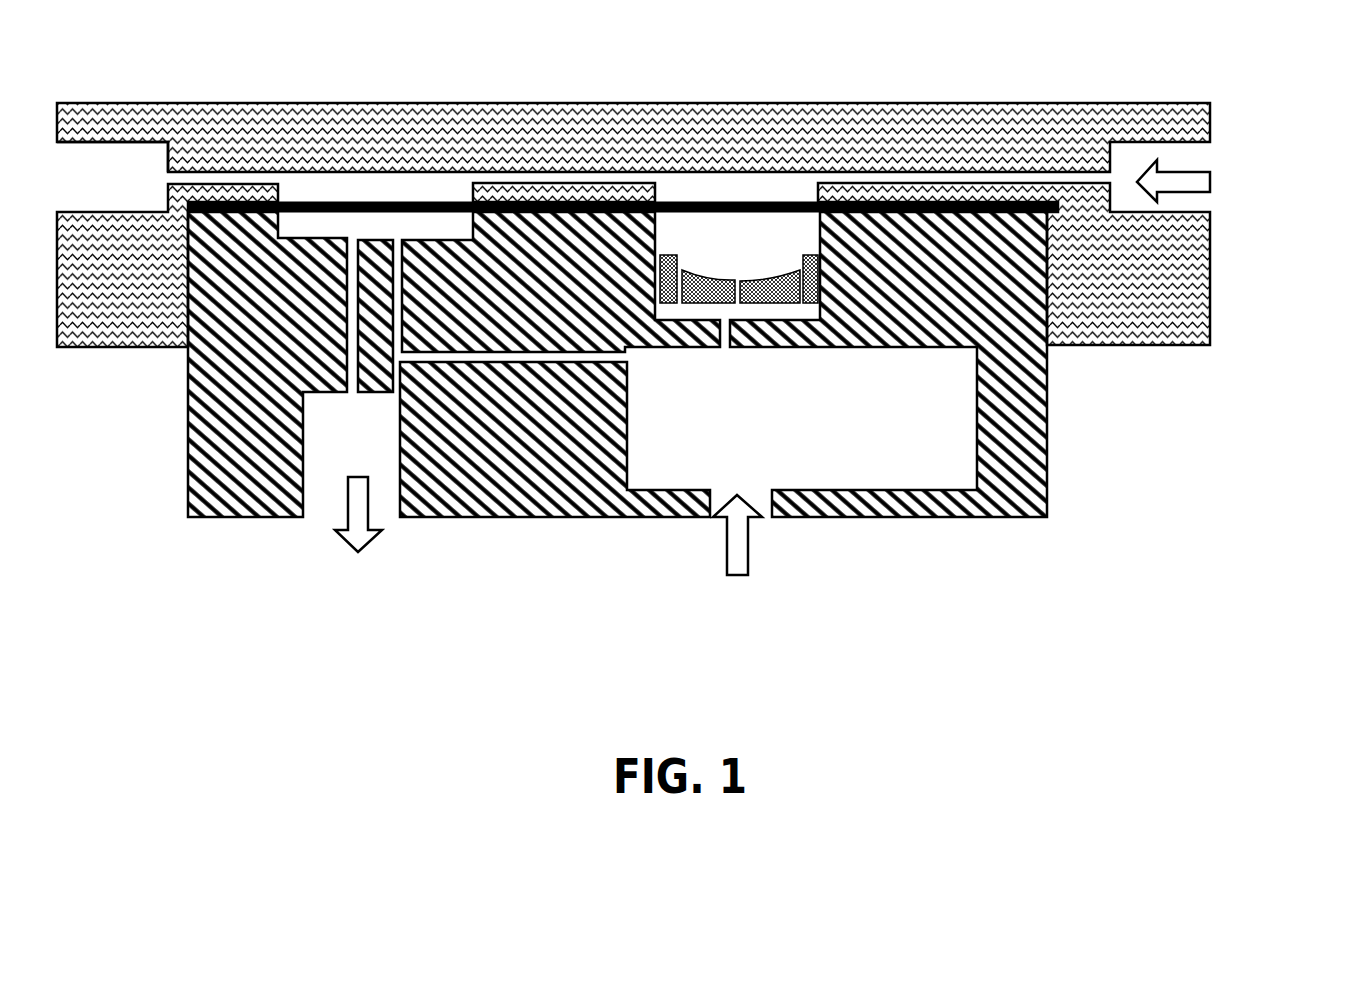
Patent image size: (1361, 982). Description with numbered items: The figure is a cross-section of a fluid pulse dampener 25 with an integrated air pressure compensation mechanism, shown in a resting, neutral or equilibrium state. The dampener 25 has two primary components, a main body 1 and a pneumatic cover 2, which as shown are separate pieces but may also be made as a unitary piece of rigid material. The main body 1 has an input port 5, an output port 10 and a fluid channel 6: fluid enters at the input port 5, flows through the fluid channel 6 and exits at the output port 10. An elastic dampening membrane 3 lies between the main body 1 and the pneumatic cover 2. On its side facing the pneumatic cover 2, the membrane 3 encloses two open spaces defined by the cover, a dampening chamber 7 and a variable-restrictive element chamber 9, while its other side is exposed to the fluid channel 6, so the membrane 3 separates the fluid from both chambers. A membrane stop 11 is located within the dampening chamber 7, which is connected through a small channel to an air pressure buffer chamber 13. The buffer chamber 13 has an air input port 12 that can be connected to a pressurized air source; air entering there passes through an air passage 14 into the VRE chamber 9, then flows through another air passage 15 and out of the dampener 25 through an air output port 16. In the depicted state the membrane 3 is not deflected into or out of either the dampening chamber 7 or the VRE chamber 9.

The main body 1 is at (1168, 308).
The pneumatic cover 2 is at (1018, 496).
The elastic dampening membrane 3 is at (313, 200).
The input port 5 is at (1187, 158).
The fluid channel 6 is at (926, 178).
The dampening chamber 7 is at (731, 245).
The variable-restrictive element (VRE) chamber 9 is at (379, 234).
The output port 10 is at (126, 185).
The membrane stop 11 is at (781, 292).
The air input port 12 is at (769, 528).
The air pressure buffer chamber 13 is at (868, 441).
The air passage 14 is at (541, 365).
The air passage 15 is at (343, 318).
The air output port 16 is at (340, 441).
The fluid pulse dampener 25 is at (445, 565).